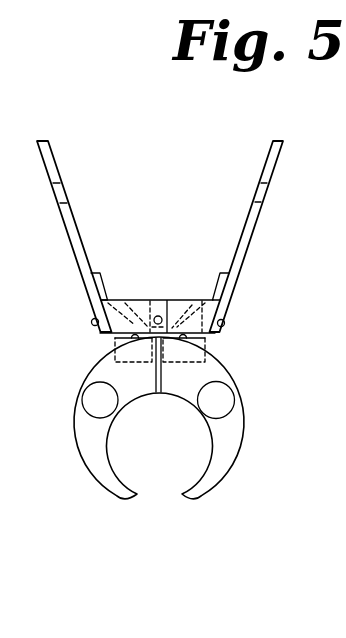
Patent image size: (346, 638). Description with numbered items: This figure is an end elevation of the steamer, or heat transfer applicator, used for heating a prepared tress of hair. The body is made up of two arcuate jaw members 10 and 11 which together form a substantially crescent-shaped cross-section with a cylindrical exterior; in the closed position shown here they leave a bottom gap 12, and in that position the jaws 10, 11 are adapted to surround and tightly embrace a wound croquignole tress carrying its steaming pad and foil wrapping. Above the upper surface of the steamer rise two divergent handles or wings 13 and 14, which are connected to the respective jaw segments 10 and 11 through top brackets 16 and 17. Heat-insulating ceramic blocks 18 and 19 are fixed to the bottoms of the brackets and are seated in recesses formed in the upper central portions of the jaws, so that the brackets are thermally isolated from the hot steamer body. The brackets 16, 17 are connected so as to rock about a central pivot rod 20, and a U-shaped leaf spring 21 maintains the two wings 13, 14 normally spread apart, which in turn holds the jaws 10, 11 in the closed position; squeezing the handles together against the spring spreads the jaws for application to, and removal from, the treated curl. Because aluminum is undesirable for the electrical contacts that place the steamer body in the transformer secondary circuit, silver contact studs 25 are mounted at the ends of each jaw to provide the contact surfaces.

The arcuate jaw member 10 is at (235, 450).
The arcuate jaw member 11 is at (112, 480).
The bottom gap 12 is at (158, 496).
The handle or wing 13 is at (258, 217).
The handle or wing 14 is at (77, 217).
The top bracket 16 is at (208, 318).
The top bracket 17 is at (103, 315).
The heat-insulating ceramic block 18 is at (203, 342).
The heat-insulating ceramic block 19 is at (120, 340).
The central pivot rod 20 is at (160, 316).
The U-shaped leaf spring 21 is at (213, 299).
The contact stud 25 is at (228, 397).